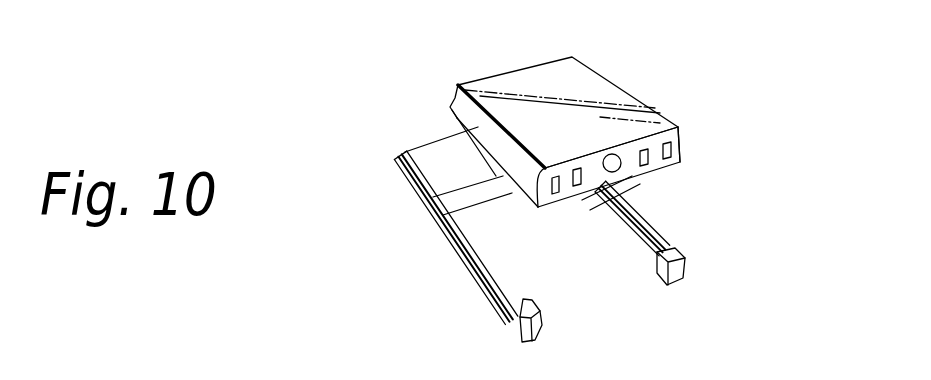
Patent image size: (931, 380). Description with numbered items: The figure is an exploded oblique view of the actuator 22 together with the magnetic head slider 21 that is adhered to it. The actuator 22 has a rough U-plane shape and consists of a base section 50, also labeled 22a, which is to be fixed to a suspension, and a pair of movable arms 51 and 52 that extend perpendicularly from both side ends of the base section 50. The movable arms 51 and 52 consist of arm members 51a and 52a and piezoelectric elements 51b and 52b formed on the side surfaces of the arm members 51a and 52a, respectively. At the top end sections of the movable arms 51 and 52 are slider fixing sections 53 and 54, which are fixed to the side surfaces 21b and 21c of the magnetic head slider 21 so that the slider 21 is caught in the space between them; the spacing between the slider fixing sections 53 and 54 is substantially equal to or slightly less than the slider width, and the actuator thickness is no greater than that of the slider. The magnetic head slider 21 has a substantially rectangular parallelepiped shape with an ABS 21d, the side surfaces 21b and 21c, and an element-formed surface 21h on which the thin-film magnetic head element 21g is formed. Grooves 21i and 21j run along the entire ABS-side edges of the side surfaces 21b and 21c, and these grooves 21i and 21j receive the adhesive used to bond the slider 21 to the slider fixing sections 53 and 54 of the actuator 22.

The magnetic head slider 21 is at (571, 144).
The side surface 21b is at (456, 122).
The side surface 21c is at (684, 151).
The ABS 21d is at (559, 96).
The thin-film magnetic head element 21g is at (609, 172).
The element-formed surface 21h is at (626, 172).
The groove 21i is at (458, 86).
The groove 21j is at (678, 130).
The actuator 22 is at (453, 239).
The base section 22a is at (388, 166).
The base section 50 is at (453, 171).
The movable arm 51 is at (395, 237).
The arm member 51a is at (445, 227).
The piezoelectric element 51b is at (455, 255).
The movable arm 52 is at (700, 258).
The arm member 52a is at (623, 211).
The piezoelectric element 52b is at (626, 220).
The slider fixing section 53 is at (540, 318).
The slider fixing section 54 is at (670, 284).